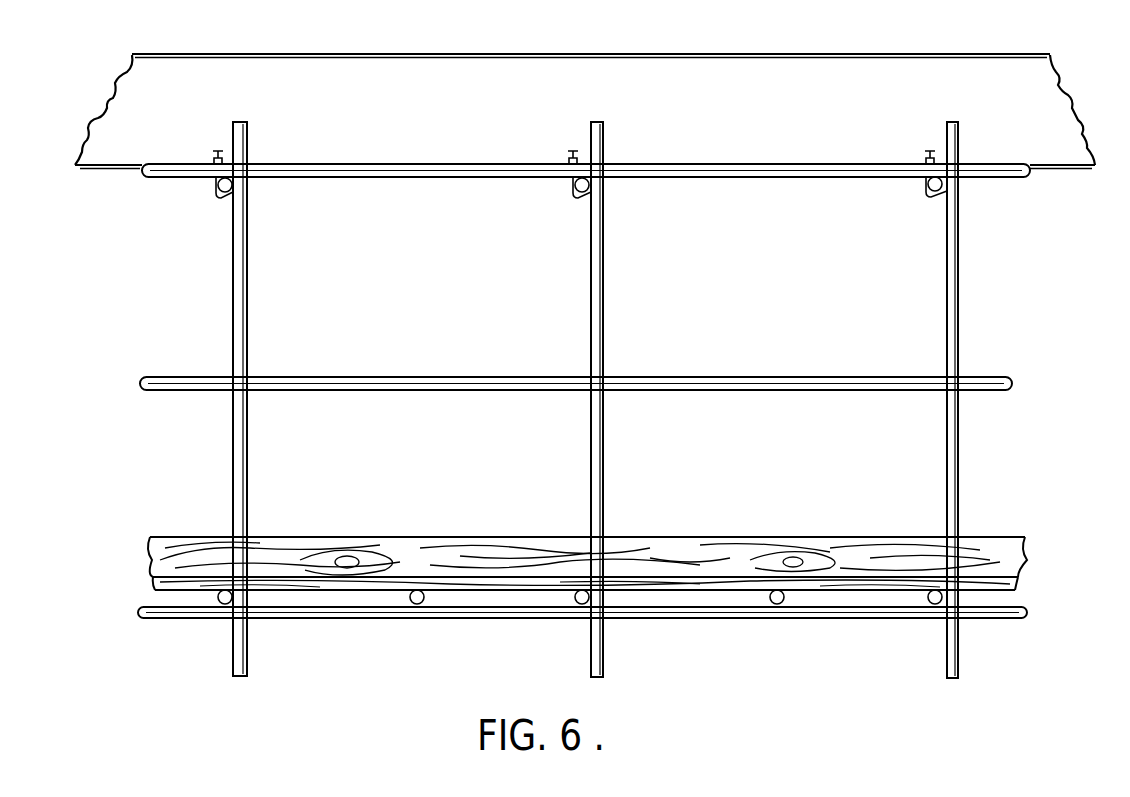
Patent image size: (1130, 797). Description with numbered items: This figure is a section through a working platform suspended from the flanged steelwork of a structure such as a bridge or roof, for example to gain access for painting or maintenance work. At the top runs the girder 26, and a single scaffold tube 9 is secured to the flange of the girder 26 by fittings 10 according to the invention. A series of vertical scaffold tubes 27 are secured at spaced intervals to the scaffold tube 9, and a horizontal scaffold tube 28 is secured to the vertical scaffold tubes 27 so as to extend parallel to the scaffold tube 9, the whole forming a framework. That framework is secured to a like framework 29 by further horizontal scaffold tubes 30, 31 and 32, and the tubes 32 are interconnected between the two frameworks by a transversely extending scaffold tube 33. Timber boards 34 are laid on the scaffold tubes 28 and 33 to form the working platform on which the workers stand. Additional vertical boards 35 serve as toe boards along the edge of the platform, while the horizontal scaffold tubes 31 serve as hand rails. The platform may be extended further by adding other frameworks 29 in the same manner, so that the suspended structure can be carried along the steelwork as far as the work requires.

The girder 26 is at (933, 52).
The fitting 10 is at (218, 150).
The scaffold tube 9 is at (221, 193).
The horizontal scaffold tube 30 is at (1007, 173).
The framework 29 is at (240, 323).
The vertical scaffold tube 27 is at (947, 315).
The horizontal scaffold tube 31 is at (982, 383).
The vertical board 35 is at (1017, 550).
The timber board 34 is at (485, 585).
The horizontal scaffold tube 28 is at (222, 605).
The transversely extending scaffold tube 33 is at (412, 605).
The horizontal scaffold tube 32 is at (1003, 617).